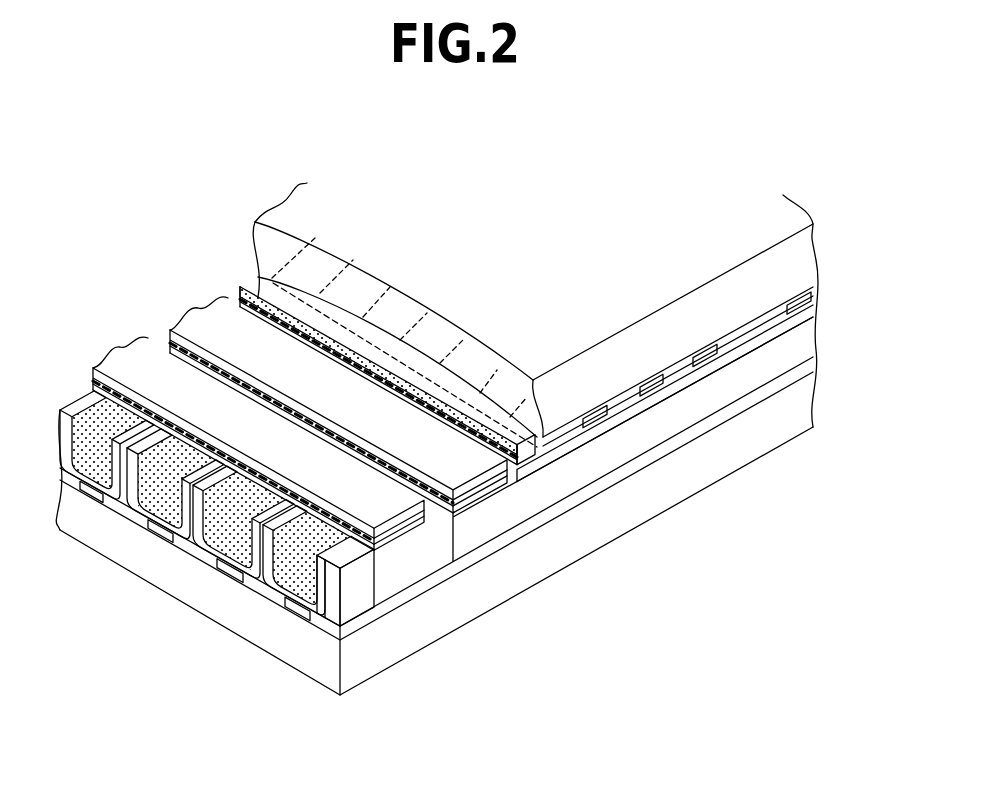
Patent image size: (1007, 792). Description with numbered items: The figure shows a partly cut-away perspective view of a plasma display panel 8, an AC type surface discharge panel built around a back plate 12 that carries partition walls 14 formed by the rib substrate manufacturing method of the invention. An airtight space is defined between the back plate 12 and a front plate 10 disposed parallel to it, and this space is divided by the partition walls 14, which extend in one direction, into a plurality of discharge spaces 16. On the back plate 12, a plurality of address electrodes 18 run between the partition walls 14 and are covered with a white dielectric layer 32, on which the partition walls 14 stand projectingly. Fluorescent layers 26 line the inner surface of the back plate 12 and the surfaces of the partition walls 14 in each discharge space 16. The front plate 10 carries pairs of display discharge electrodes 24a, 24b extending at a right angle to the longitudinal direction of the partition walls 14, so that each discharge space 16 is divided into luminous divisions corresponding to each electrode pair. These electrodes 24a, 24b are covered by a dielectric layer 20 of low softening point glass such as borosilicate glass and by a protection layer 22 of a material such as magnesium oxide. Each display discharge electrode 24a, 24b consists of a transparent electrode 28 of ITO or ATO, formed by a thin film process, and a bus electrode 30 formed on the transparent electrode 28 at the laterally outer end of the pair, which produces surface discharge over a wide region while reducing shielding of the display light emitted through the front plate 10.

The plasma display panel 8 is at (650, 152).
The front plate 10 is at (303, 190).
The back plate 12 is at (625, 522).
The partition walls 14 is at (155, 480).
The discharge spaces 16 is at (93, 421).
The address electrodes 18 is at (226, 572).
The dielectric layer 20 is at (814, 362).
The protection layer 22 is at (814, 326).
The display discharge electrode 24a is at (408, 538).
The display discharge electrode 24b is at (513, 499).
The fluorescent layers 26 is at (128, 508).
The transparent electrode 28 is at (472, 530).
The bus electrode 30 is at (400, 548).
The white dielectric layer 32 is at (326, 626).